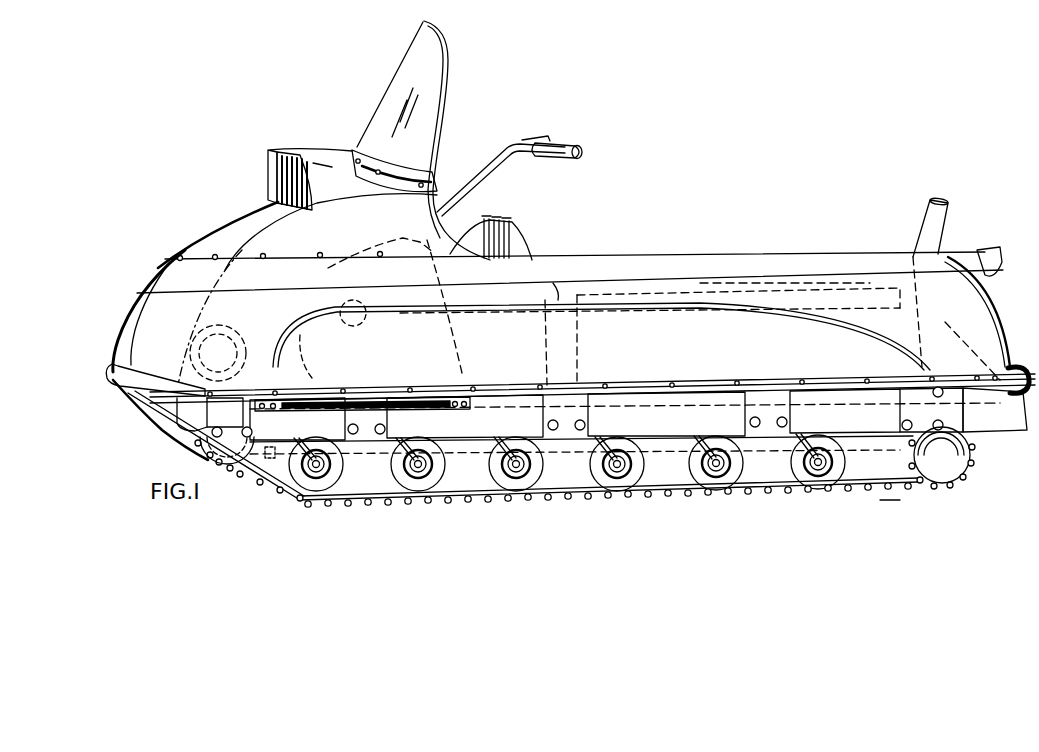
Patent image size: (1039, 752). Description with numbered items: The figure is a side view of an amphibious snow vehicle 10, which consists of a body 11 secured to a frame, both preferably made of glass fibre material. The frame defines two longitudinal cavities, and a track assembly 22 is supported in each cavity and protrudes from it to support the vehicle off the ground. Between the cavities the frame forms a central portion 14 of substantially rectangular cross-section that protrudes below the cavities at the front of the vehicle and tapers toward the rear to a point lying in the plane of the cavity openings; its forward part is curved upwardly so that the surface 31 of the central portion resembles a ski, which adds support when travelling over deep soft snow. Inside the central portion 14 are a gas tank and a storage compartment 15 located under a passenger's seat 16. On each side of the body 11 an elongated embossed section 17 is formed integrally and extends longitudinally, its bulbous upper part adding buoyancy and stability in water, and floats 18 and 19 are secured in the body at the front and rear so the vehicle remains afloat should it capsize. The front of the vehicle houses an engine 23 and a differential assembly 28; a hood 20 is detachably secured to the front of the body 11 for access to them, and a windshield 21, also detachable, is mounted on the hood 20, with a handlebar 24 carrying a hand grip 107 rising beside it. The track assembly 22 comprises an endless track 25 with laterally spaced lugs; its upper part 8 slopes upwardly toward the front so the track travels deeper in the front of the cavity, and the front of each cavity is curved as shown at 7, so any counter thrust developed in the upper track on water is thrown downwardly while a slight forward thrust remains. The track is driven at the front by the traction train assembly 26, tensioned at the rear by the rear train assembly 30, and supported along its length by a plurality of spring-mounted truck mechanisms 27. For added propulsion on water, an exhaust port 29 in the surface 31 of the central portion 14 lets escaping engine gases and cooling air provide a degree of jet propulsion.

The amphibious snow vehicle 10 is at (890, 496).
The body 11 is at (137, 302).
The central portion 14 is at (575, 444).
The storage compartment 15 is at (684, 300).
The passenger's seat 16 is at (822, 303).
The elongated embossed section 17 is at (556, 283).
The float 18 is at (452, 343).
The float 19 is at (962, 340).
The hood 20 is at (241, 228).
The windshield 21 is at (393, 88).
The track assembly 22 is at (241, 483).
The engine 23 is at (470, 231).
The handlebar 24 is at (477, 170).
The hand grip 107 is at (556, 146).
The curved front of cavity 7 is at (210, 414).
The upper part of track assembly 8 is at (508, 409).
The endless track 25 is at (304, 502).
The traction train assembly 26 is at (197, 447).
The truck mechanism 27 is at (618, 446).
The differential assembly 28 is at (226, 328).
The exhaust port 29 is at (268, 486).
The rear train assembly 30 is at (915, 451).
The surface of central portion 31 is at (763, 438).